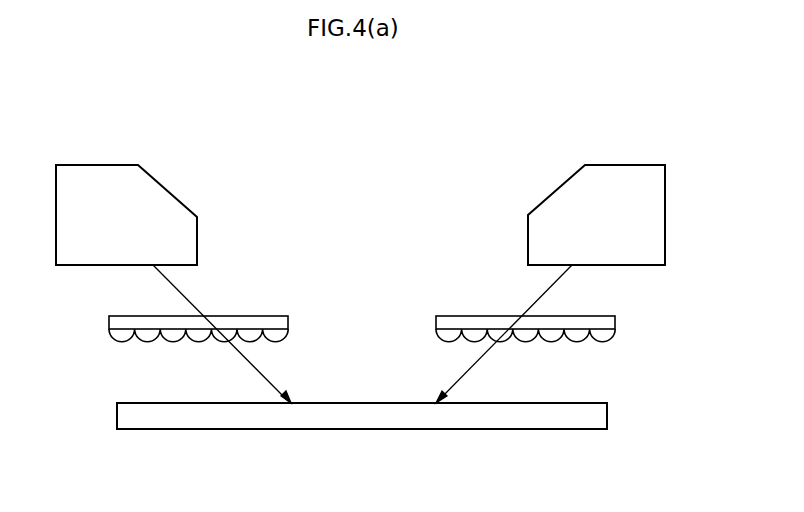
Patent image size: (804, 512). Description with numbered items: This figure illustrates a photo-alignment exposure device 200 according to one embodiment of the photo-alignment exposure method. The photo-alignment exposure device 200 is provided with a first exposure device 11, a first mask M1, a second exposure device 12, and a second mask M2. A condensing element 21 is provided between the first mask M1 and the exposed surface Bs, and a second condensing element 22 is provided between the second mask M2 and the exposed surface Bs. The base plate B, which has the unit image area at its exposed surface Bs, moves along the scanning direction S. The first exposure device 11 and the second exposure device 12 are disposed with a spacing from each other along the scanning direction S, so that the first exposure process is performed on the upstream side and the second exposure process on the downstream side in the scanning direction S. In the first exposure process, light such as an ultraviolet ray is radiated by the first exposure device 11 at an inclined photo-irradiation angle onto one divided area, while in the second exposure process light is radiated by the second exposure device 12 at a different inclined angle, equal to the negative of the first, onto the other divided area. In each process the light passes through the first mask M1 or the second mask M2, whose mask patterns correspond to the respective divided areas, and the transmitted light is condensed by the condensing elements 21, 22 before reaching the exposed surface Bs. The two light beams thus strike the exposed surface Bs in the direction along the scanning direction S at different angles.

The photo-alignment exposure device 200 is at (711, 131).
The first exposure device 11 is at (98, 165).
The second exposure device 12 is at (620, 165).
The condensing element 21 is at (112, 337).
The second condensing element 22 is at (436, 337).
The first mask M1 is at (288, 320).
The second mask M2 is at (615, 320).
The base plate B is at (607, 415).
The exposed surface Bs is at (580, 403).
The scanning direction S is at (550, 458).